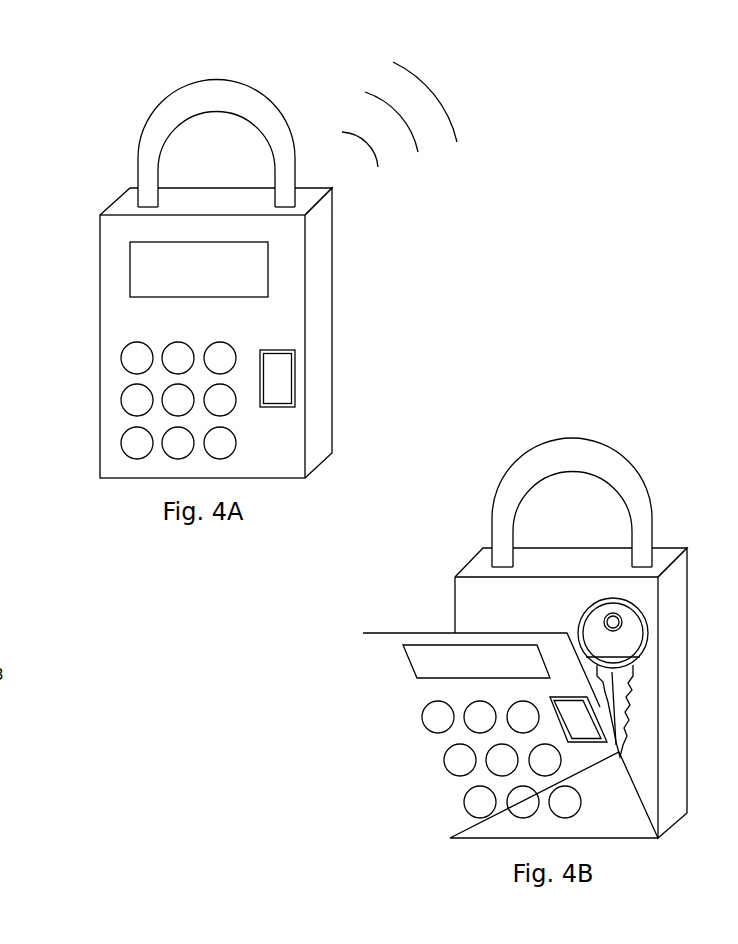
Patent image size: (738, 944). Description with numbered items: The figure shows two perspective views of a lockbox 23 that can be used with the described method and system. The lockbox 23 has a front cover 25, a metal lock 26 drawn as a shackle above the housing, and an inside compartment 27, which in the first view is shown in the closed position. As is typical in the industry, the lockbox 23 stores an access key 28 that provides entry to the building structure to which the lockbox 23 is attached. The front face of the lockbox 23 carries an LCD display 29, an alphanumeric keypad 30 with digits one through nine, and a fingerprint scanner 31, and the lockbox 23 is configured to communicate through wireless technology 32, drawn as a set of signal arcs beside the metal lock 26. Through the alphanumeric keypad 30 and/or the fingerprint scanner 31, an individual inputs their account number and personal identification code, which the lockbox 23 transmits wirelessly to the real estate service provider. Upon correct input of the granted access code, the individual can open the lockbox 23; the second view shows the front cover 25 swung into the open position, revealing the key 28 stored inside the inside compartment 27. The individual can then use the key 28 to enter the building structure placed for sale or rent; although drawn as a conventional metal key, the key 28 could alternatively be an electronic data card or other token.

In FIG. 4A, the lockbox 23 is at (317, 333).
In FIG. 4B, the lockbox 23 is at (672, 702).
In FIG. 4A, the front cover 25 is at (110, 292).
In FIG. 4B, the front cover 25 is at (390, 660).
In FIG. 4A, the metal lock 26 is at (248, 110).
In FIG. 4B, the metal lock 26 is at (620, 485).
In FIG. 4A, the inside compartment 27 is at (113, 242).
In FIG. 4B, the inside compartment 27 is at (472, 593).
In FIG. 4B, the access key 28 is at (633, 632).
In FIG. 4A, the LCD display 29 is at (258, 263).
In FIG. 4A, the alphanumeric keypad 30 is at (122, 364).
In FIG. 4A, the fingerprint scanner 31 is at (280, 390).
In FIG. 4A, the wireless technology 32 is at (447, 100).